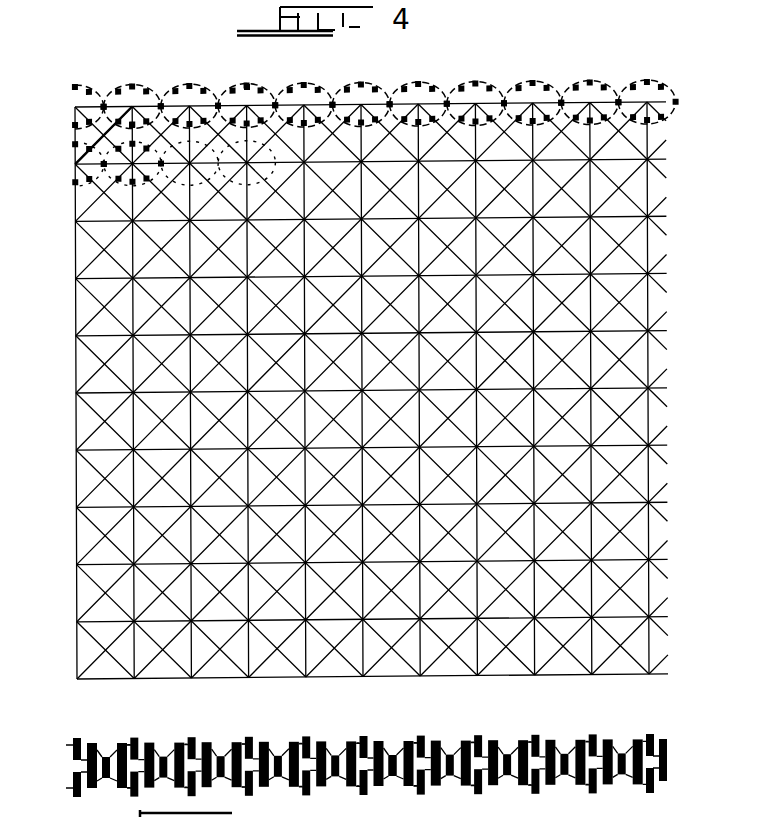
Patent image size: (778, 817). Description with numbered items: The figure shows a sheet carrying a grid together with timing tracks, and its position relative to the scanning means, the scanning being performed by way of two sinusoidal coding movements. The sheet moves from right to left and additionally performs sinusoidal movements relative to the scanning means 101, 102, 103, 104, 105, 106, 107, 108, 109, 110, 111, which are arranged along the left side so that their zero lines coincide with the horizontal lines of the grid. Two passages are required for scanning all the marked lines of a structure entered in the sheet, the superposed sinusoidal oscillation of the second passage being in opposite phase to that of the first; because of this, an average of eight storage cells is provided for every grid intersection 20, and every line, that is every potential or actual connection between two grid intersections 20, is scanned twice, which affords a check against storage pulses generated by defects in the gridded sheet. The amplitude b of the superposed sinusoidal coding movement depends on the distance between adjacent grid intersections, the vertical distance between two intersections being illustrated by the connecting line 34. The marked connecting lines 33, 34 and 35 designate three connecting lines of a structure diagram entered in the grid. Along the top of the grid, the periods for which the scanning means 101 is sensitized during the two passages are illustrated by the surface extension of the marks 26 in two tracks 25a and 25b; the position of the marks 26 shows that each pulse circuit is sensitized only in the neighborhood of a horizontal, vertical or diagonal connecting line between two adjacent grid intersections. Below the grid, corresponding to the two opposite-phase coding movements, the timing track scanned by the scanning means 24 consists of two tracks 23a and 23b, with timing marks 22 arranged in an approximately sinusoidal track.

The grid intersection 20 is at (652, 330).
The scanning means 101 is at (60, 107).
The scanning means 102 is at (60, 164).
The scanning means 103 is at (60, 221).
The scanning means 104 is at (60, 279).
The scanning means 105 is at (60, 336).
The scanning means 106 is at (60, 393).
The scanning means 107 is at (60, 450).
The scanning means 108 is at (60, 507).
The scanning means 109 is at (60, 565).
The scanning means 110 is at (60, 622).
The scanning means 111 is at (60, 679).
The track 25a is at (159, 105).
The track 25b is at (669, 96).
The marks 26 is at (660, 84).
The marked connecting line 33 is at (89, 106).
The marked connecting line 34 is at (135, 127).
The marked connecting line 35 is at (95, 137).
The amplitude b is at (250, 92).
The scanning means 24 is at (62, 767).
The timing track 23a is at (670, 772).
The timing track 23b is at (670, 752).
The timing marks 22 is at (390, 778).